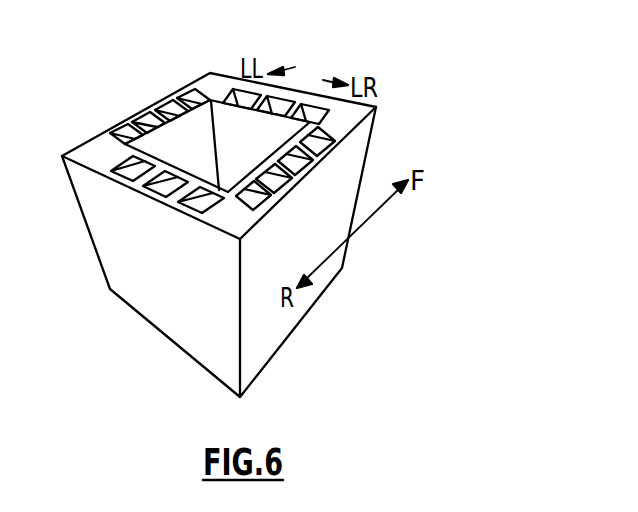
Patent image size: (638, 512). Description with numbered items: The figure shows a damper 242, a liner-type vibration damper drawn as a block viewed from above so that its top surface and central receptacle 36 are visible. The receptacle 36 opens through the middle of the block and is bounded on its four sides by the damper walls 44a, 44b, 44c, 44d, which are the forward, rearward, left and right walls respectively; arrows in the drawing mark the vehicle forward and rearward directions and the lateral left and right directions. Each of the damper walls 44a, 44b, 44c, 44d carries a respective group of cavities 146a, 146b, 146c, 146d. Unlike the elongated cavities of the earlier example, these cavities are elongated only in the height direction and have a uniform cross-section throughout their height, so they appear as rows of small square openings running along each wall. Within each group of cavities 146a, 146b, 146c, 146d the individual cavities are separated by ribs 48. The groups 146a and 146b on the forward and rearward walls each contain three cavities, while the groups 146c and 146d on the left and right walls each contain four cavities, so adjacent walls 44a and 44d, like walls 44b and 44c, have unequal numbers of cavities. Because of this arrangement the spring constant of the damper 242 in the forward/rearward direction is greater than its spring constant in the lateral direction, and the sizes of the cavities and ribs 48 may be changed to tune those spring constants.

The damper 242 is at (173, 342).
The receptacle 36 is at (205, 128).
The damper wall 44a is at (274, 103).
The damper wall 44b is at (166, 192).
The damper wall 44c is at (152, 106).
The damper wall 44d is at (320, 138).
The ribs 48 is at (276, 182).
The group of cavities 146a is at (229, 88).
The group of cavities 146b is at (226, 147).
The group of cavities 146c is at (172, 100).
The group of cavities 146d is at (316, 160).